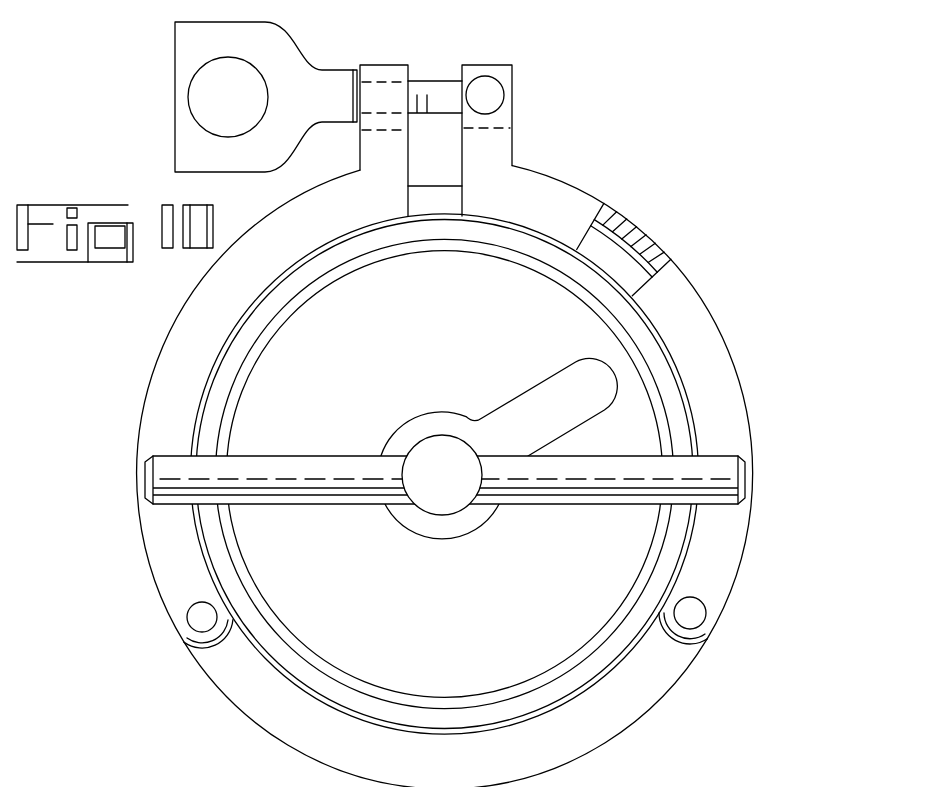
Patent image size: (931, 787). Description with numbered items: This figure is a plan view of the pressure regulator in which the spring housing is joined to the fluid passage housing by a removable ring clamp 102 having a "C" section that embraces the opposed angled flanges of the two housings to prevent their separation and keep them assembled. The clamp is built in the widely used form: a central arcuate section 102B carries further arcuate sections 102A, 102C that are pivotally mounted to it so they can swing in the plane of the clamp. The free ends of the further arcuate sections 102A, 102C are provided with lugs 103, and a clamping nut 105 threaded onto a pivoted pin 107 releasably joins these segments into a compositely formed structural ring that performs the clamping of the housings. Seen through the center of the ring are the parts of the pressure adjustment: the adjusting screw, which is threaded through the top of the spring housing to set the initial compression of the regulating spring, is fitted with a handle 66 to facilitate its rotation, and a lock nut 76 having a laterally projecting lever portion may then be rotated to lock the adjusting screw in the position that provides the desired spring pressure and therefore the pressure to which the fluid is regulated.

The handle 66 is at (280, 506).
The lock nut 76 is at (530, 384).
The ring clamp 102 is at (621, 188).
The further arcuate section 102A is at (177, 312).
The central arcuate section 102B is at (672, 693).
The further arcuate section 102C is at (710, 308).
The lug 103 is at (360, 143).
The clamping nut 105 is at (288, 30).
The pivoted pin 107 is at (422, 80).